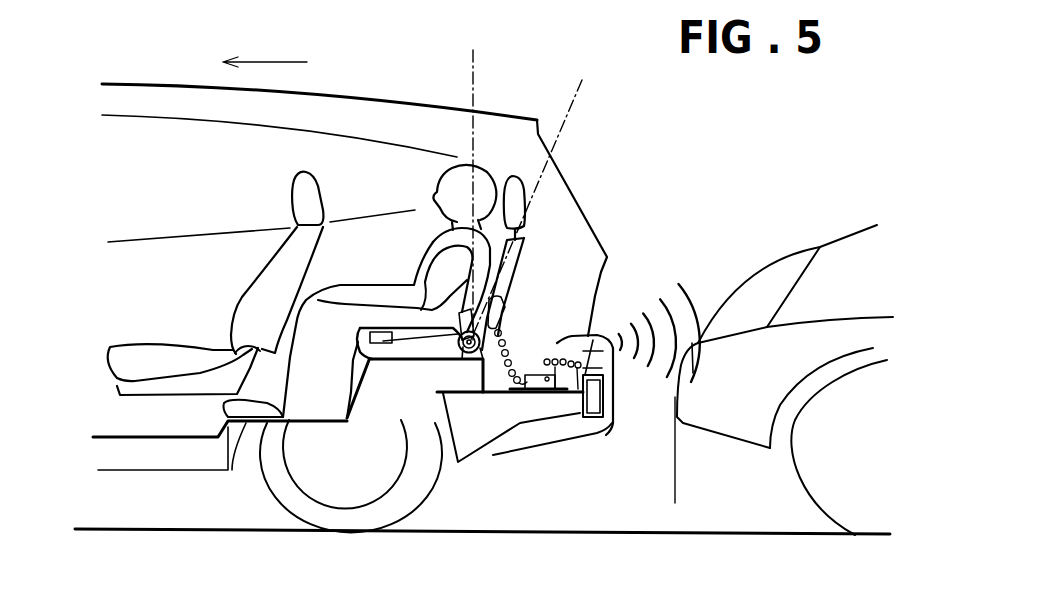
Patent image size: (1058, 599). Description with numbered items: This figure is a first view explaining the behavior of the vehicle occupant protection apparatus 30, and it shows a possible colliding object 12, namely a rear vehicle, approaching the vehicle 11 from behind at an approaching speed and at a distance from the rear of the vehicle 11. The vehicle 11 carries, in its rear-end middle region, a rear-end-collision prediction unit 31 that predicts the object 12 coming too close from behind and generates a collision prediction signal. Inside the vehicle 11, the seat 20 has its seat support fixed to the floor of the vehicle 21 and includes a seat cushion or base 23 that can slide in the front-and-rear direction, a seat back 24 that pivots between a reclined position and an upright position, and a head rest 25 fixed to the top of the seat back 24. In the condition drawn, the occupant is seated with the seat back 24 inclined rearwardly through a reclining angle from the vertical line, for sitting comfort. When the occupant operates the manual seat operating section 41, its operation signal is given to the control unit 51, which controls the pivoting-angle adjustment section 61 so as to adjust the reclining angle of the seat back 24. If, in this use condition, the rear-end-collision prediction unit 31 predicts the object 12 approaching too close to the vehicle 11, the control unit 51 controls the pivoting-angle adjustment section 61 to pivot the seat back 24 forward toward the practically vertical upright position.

The vehicle 11 is at (156, 71).
The possible colliding object 12 is at (775, 247).
The seat 20 is at (355, 372).
The floor of the vehicle 21 is at (213, 464).
The seat cushion or base 23 is at (398, 341).
The seat back 24 is at (527, 250).
The head rest 25 is at (516, 190).
The vehicle occupant protection apparatus 30 is at (567, 331).
The rear-end-collision prediction unit 31 is at (576, 418).
The manual seat operating section 41 is at (378, 344).
The control unit 51 is at (530, 392).
The pivoting-angle adjustment section 61 is at (466, 355).